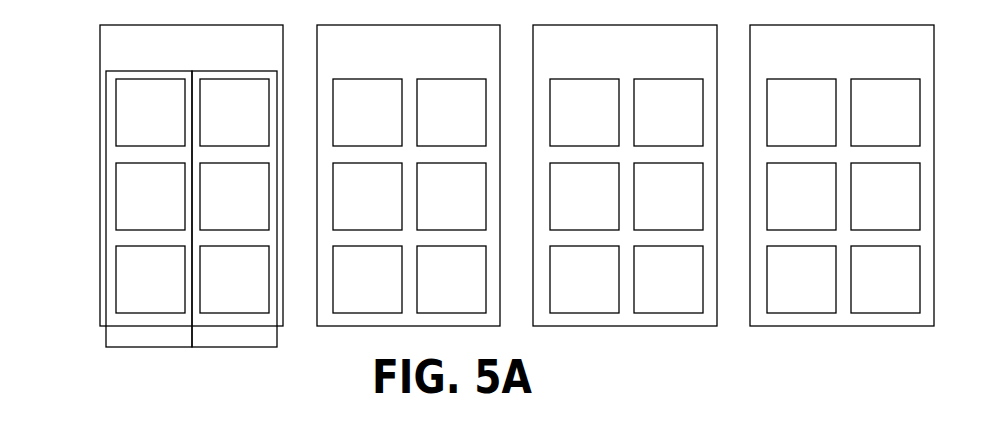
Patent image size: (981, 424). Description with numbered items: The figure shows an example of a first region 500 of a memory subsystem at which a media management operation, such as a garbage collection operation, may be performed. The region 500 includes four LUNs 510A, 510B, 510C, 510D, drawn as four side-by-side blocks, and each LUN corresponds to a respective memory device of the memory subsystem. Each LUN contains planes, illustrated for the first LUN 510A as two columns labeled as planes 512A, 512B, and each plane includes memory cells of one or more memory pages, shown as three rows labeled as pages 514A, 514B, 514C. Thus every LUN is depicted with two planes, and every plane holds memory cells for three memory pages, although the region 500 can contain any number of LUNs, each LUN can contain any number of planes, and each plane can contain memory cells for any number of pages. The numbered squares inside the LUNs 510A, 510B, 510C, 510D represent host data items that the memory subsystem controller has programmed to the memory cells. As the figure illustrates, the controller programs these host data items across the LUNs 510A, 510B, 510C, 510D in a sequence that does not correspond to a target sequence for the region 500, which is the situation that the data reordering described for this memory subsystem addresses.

The first region 500 is at (90, 49).
The LUN 510A is at (246, 56).
The LUN 510B is at (463, 56).
The LUN 510C is at (679, 56).
The LUN 510D is at (896, 56).
The plane 512A is at (150, 347).
The plane 512B is at (237, 347).
The memory page 514A is at (116, 108).
The memory page 514B is at (116, 197).
The memory page 514C is at (116, 281).